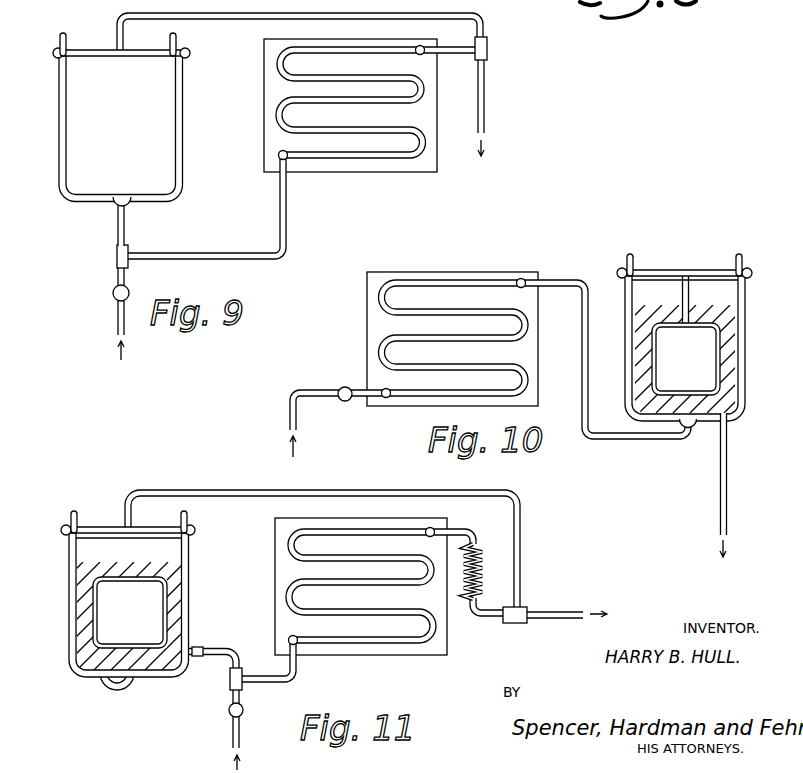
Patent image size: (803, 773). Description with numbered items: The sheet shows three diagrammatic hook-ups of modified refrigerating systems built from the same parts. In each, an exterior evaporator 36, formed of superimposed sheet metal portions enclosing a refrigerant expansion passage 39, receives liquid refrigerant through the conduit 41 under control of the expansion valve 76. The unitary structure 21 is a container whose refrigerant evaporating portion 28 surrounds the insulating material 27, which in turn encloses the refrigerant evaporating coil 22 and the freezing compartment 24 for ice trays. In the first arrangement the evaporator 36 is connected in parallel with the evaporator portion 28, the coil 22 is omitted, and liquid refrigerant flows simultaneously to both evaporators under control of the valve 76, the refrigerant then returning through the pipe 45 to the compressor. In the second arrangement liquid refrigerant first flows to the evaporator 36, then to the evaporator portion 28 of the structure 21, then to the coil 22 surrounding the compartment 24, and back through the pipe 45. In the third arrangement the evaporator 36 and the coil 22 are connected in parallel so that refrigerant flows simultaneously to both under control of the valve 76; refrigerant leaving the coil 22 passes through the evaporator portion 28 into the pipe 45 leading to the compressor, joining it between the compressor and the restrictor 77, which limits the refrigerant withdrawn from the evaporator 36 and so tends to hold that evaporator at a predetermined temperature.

In FIG. 10, the unitary structure 21 is at (787, 326).
In FIG. 11, the unitary structure 21 is at (70, 585).
In FIG. 10, the refrigerant evaporating coil 22 is at (662, 317).
In FIG. 11, the refrigerant evaporating coil 22 is at (112, 577).
In FIG. 10, the freezing compartment 24 is at (695, 368).
In FIG. 10, the insulating material 27 is at (727, 315).
In FIG. 11, the insulating material 27 is at (173, 573).
In FIG. 9, the refrigerant evaporating portion 28 is at (68, 143).
In FIG. 10, the refrigerant evaporating portion 28 is at (748, 367).
In FIG. 11, the refrigerant evaporating portion 28 is at (70, 627).
In FIG. 9, the evaporator 36 is at (277, 91).
In FIG. 10, the evaporator 36 is at (415, 277).
In FIG. 11, the evaporator 36 is at (288, 572).
In FIG. 9, the refrigerant expansion passage 39 is at (285, 133).
In FIG. 10, the refrigerant expansion passage 39 is at (380, 347).
In FIG. 11, the refrigerant expansion passage 39 is at (290, 603).
In FIG. 9, the conduit 41 is at (120, 325).
In FIG. 10, the conduit 41 is at (293, 413).
In FIG. 11, the conduit 41 is at (232, 735).
In FIG. 9, the conduit or pipe 45 is at (485, 110).
In FIG. 10, the conduit or pipe 45 is at (720, 497).
In FIG. 11, the conduit or pipe 45 is at (557, 608).
In FIG. 9, the expansion valve 76 is at (113, 293).
In FIG. 10, the expansion valve 76 is at (345, 387).
In FIG. 11, the expansion valve 76 is at (228, 710).
In FIG. 11, the restrictor 77 is at (483, 557).